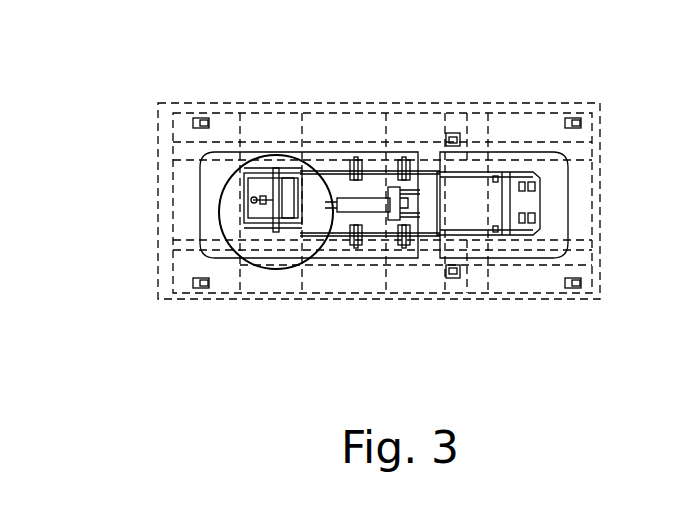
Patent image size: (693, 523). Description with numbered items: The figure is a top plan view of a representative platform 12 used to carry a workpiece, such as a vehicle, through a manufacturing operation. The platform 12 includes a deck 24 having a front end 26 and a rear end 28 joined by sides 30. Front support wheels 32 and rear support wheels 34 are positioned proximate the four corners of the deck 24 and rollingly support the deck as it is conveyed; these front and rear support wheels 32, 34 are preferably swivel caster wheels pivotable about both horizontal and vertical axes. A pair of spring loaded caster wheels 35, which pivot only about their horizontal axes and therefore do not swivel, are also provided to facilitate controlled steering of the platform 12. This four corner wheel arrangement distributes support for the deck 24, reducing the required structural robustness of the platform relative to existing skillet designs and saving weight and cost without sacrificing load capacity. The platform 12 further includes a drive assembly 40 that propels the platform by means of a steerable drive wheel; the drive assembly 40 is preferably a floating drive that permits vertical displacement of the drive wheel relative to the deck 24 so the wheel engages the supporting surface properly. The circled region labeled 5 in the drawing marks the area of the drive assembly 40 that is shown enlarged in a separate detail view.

The detail view circle (FIG. 5) 5 is at (276, 269).
The platform 12 is at (410, 96).
The deck 24 is at (343, 110).
The front end 26 is at (157, 170).
The rear end 28 is at (602, 190).
The sides 30 is at (302, 110).
The front support wheels 32 is at (200, 117).
The rear support wheels 34 is at (570, 117).
The spring loaded caster wheels 35 is at (455, 132).
The drive assembly 40 is at (234, 219).